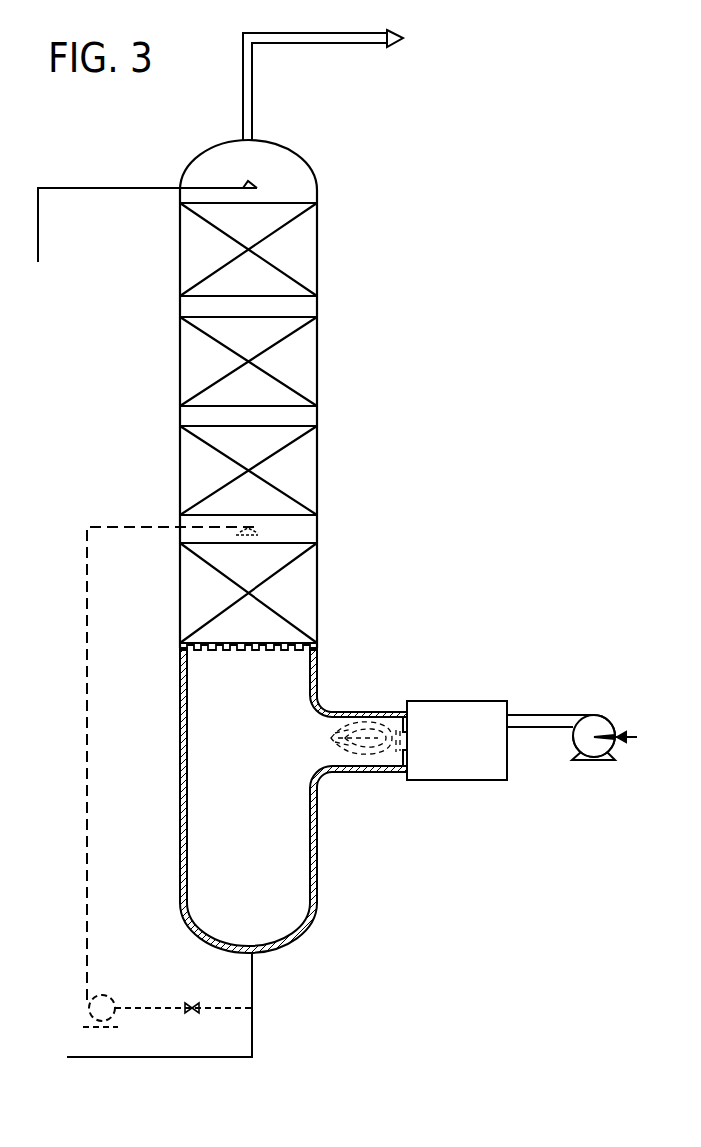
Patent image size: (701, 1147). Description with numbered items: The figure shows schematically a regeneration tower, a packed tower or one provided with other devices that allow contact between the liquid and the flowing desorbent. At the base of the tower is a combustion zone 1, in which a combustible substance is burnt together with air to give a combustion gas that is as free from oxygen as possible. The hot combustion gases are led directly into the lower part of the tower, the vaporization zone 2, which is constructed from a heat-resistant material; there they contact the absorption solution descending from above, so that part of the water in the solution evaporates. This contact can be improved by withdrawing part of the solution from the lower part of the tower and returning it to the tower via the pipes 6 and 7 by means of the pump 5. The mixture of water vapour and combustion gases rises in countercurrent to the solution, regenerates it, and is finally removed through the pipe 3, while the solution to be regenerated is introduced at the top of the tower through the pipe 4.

The combustion zone 1 is at (484, 740).
The vaporization zone 2 is at (293, 799).
The pipe 3 is at (323, 72).
The pipe 4 is at (147, 210).
The pump 5 is at (158, 1011).
The pipe 6 is at (165, 996).
The pipe 7 is at (172, 745).